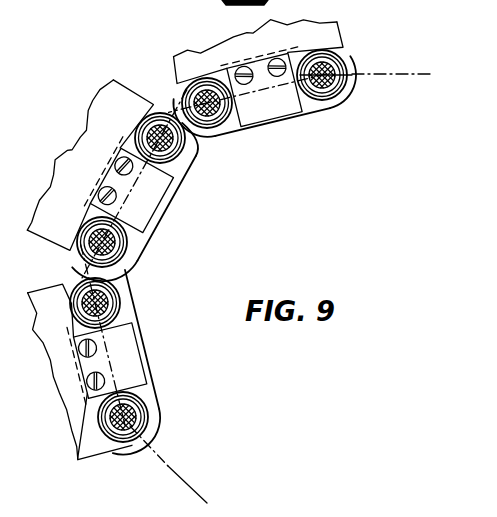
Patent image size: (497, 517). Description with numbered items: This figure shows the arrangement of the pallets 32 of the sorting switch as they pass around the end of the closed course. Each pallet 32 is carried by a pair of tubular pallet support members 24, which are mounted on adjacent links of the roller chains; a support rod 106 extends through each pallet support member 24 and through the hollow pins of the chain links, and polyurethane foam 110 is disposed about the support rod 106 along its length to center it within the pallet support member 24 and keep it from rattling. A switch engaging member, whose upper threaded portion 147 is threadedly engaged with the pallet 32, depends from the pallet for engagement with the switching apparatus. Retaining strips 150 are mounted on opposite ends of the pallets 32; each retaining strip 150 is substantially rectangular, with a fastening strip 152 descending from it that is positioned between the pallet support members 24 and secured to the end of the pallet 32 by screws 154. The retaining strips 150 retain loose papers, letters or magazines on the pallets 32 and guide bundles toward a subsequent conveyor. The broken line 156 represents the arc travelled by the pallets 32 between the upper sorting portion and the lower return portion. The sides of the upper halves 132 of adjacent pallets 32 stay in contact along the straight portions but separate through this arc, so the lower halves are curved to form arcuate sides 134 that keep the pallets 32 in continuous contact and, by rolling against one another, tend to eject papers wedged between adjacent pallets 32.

The pallet support member 24 is at (340, 90).
The pallet 32 is at (350, 150).
The support rod 106 is at (326, 85).
The polyurethane foam 110 is at (343, 61).
The upper half 132 is at (163, 106).
The arcuate sides 134 is at (202, 142).
The upper threaded portion 147 is at (217, 13).
The retaining strip 150 is at (352, 30).
The fastening strip 152 is at (275, 118).
The screws 154 is at (274, 58).
The broken line 156 is at (400, 76).